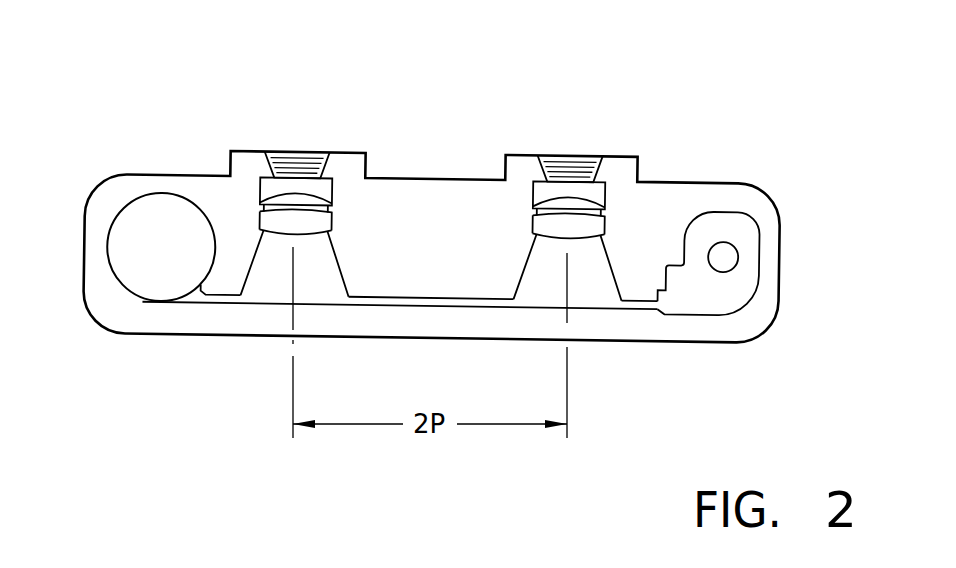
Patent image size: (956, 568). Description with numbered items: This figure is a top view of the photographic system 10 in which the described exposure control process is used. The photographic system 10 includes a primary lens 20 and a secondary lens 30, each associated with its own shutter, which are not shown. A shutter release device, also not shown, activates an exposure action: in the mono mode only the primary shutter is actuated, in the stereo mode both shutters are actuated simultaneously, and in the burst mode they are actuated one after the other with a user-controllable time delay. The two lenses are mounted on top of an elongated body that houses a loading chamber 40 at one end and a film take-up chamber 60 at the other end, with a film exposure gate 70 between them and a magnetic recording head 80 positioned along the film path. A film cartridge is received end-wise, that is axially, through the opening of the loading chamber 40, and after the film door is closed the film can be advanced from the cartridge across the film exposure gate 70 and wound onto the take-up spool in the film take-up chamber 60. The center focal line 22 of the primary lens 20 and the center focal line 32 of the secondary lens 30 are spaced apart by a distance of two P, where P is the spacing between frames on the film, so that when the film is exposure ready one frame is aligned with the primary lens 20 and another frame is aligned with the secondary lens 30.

The photographic system 10 is at (440, 70).
The primary lens 20 is at (292, 153).
The secondary lens 30 is at (571, 157).
The center focal line of the primary lens 22 is at (263, 360).
The center focal line of the secondary lens 32 is at (606, 365).
The loading chamber 40 is at (749, 306).
The film take-up chamber 60 is at (118, 289).
The film exposure gate 70 is at (418, 301).
The magnetic recording head 80 is at (222, 294).